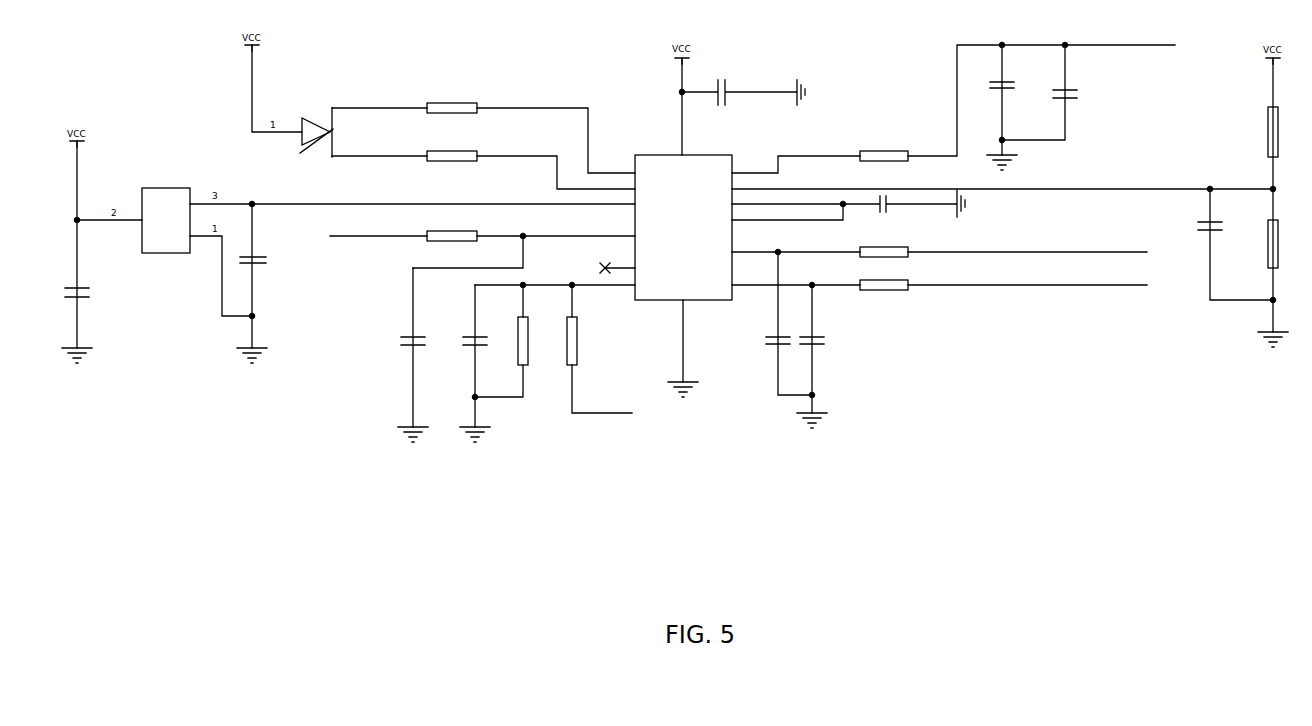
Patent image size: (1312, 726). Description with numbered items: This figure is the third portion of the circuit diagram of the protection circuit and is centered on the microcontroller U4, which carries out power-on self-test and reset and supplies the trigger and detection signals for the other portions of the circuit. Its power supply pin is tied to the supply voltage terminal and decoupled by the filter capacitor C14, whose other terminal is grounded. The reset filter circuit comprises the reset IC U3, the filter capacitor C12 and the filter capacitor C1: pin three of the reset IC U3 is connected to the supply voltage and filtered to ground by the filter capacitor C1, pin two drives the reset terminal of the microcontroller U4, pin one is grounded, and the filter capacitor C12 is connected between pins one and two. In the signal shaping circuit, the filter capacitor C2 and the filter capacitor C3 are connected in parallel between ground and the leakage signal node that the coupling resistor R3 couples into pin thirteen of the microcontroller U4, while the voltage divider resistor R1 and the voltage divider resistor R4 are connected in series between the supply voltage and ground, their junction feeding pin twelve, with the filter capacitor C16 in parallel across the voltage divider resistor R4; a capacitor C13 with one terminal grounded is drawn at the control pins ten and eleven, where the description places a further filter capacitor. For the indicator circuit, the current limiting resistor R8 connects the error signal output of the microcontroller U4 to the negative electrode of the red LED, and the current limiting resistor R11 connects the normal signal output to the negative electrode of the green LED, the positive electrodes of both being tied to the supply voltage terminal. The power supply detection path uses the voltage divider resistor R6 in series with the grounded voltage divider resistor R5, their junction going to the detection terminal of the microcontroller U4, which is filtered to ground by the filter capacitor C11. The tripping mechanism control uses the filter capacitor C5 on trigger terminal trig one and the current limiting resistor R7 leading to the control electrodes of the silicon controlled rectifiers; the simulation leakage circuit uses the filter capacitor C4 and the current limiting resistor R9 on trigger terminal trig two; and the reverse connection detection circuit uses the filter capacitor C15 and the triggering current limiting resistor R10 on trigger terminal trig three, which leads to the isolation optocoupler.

The filter capacitor C1 is at (87, 284).
The reset IC U3 is at (166, 214).
The filter capacitor C12 is at (262, 283).
The red and green LED indicator LED is at (306, 125).
The current limiting resistor R8 is at (483, 122).
The current limiting resistor R11 is at (483, 162).
The microcontroller U4 is at (679, 262).
The filter capacitor C14 is at (743, 92).
The coupling resistor R3 is at (953, 103).
The filter capacitor C2 is at (1010, 107).
The filter capacitor C3 is at (1053, 92).
The capacitor C13 is at (848, 197).
The current limiting resistor R9 is at (939, 244).
The triggering current limiting resistor R10 is at (939, 285).
The filter capacitor C4 is at (777, 323).
The filter capacitor C15 is at (819, 356).
The voltage divider resistor R1 is at (1286, 132).
The voltage divider resistor R4 is at (1283, 244).
The filter capacitor C16 is at (1235, 244).
The current limiting resistor R7 is at (482, 235).
The filter capacitor C5 is at (421, 355).
The filter capacitor C11 is at (481, 363).
The voltage divider resistor R5 is at (510, 341).
The voltage divider resistor R6 is at (599, 349).